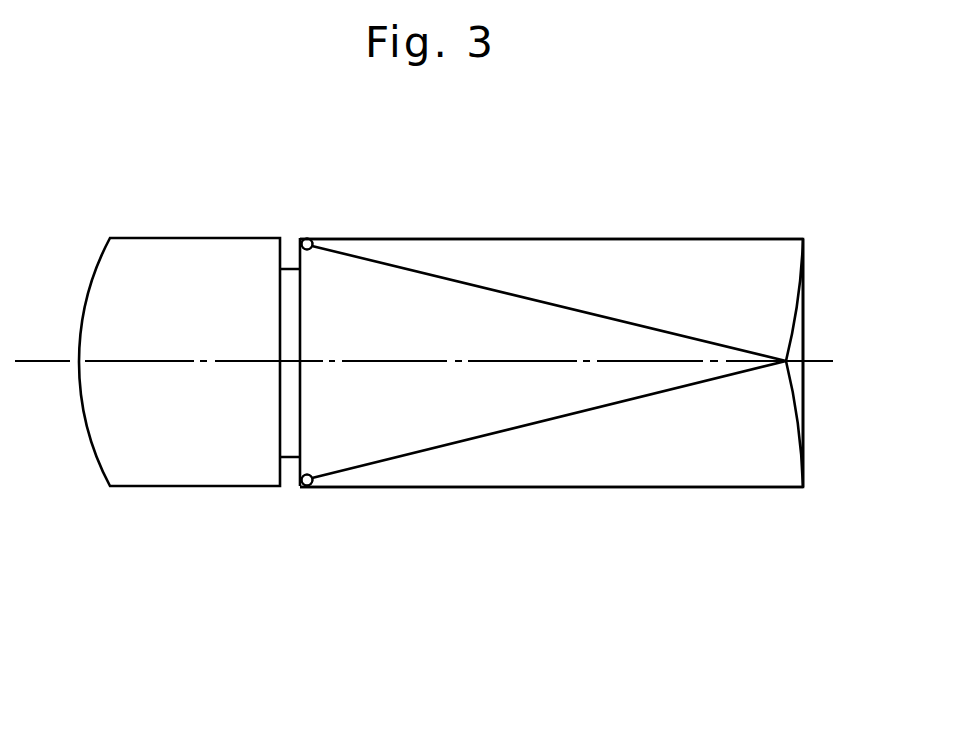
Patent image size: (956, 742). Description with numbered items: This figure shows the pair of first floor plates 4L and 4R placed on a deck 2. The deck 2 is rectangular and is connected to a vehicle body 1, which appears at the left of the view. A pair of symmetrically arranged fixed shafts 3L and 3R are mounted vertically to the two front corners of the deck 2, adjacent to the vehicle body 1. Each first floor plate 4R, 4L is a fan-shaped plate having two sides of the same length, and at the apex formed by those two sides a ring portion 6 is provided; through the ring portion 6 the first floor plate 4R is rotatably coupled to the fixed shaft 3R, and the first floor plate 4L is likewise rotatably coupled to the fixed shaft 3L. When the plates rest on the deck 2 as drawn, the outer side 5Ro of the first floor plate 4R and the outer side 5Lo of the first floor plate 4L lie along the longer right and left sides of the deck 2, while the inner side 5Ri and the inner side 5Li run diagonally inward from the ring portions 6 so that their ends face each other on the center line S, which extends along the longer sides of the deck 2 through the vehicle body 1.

The vehicle body 1 is at (225, 257).
The deck 2 is at (423, 288).
The fixed shaft 3R is at (303, 239).
The fixed shaft 3L is at (305, 487).
The ring portion 6 is at (313, 239).
The outer side 5Ro is at (598, 252).
The outer side 5Lo is at (618, 486).
The inner side 5Ri is at (610, 319).
The inner side 5Li is at (612, 404).
The first floor plate 4R is at (724, 253).
The first floor plate 4L is at (762, 468).
The center line S is at (438, 362).